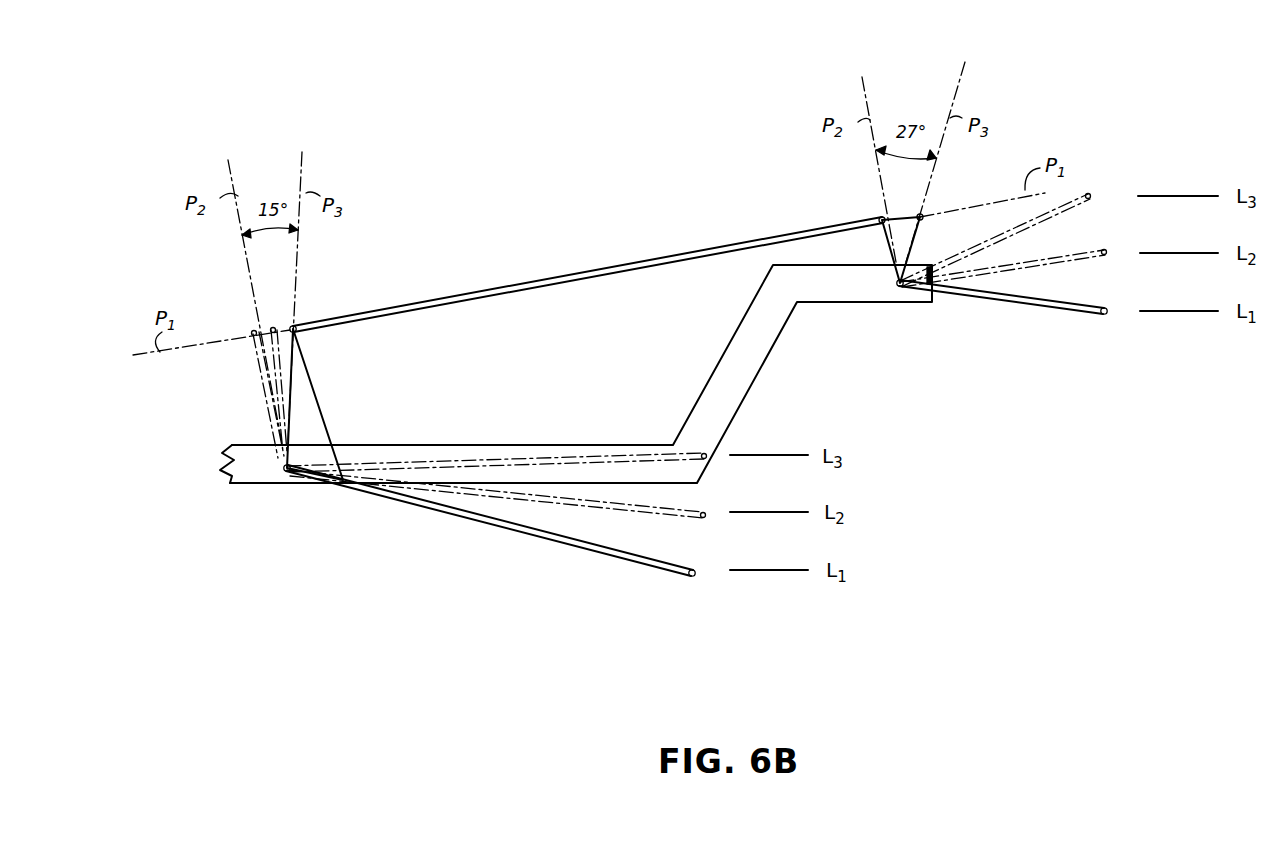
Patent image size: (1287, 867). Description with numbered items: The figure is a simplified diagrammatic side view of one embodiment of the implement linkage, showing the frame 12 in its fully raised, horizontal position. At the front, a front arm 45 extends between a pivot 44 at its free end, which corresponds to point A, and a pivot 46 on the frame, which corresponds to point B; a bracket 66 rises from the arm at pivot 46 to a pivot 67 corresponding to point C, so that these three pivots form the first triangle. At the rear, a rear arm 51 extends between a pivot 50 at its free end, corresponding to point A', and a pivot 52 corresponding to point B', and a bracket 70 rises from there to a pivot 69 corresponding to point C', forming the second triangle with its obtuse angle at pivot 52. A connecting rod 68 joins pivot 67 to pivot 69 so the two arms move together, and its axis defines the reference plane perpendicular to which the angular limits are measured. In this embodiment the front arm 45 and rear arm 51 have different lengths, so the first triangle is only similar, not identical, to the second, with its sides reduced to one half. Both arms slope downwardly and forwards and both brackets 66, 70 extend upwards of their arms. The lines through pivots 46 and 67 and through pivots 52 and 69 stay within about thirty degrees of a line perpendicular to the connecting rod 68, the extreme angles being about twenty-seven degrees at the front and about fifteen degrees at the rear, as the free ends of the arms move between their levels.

The frame 12 is at (714, 378).
The pivot 44 is at (1103, 315).
The front arm 45 is at (1022, 304).
The pivot 46 is at (896, 290).
The pivot 50 is at (692, 576).
The rear arm 51 is at (488, 524).
The pivot 52 is at (286, 472).
The bracket 66 is at (927, 250).
The pivot 67 is at (949, 200).
The connecting rod 68 is at (530, 272).
The pivot 69 is at (293, 329).
The bracket 70 is at (311, 372).